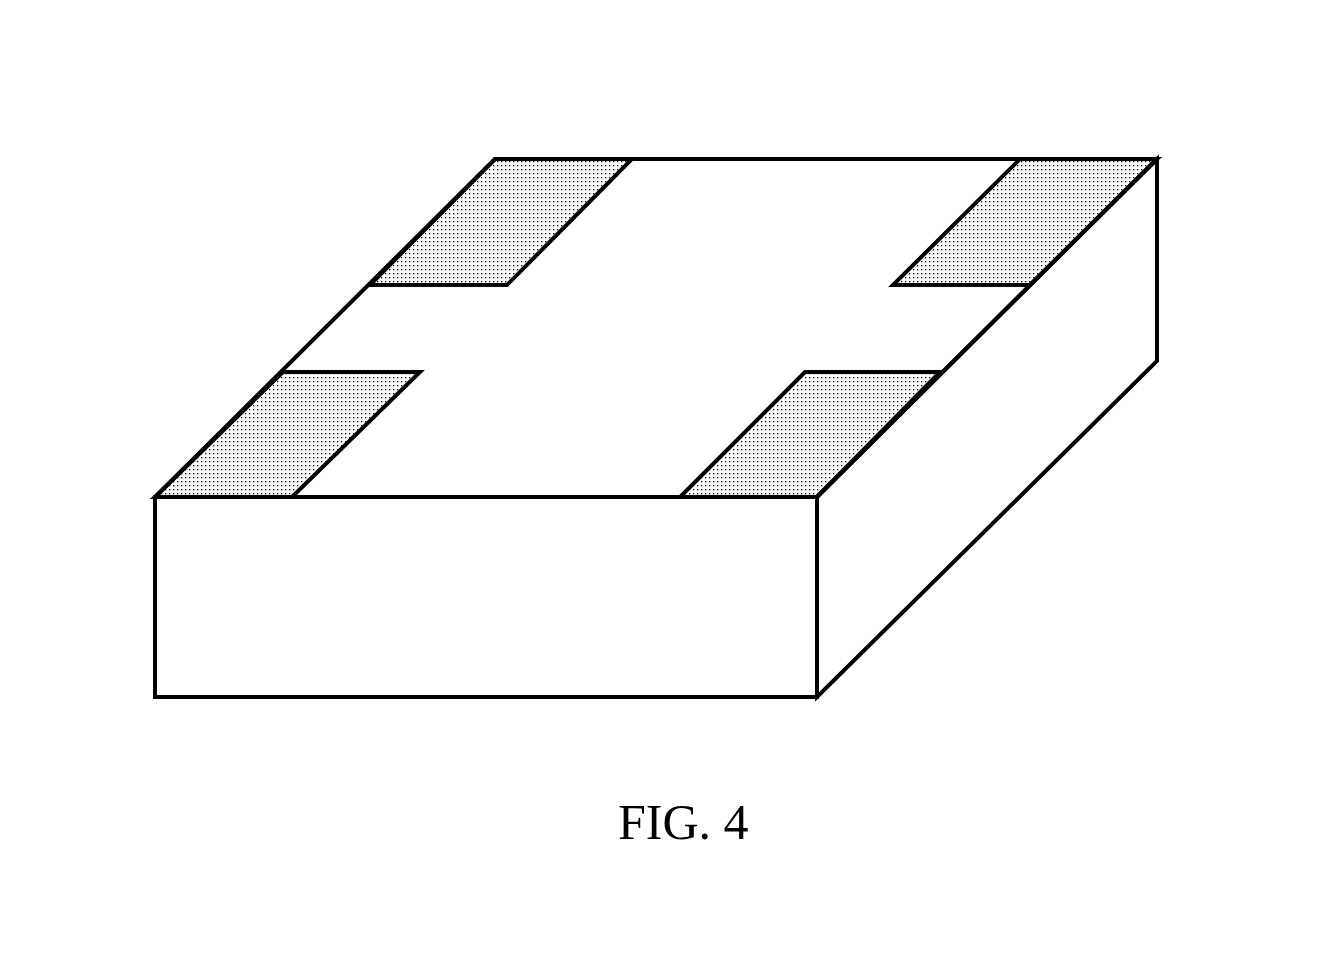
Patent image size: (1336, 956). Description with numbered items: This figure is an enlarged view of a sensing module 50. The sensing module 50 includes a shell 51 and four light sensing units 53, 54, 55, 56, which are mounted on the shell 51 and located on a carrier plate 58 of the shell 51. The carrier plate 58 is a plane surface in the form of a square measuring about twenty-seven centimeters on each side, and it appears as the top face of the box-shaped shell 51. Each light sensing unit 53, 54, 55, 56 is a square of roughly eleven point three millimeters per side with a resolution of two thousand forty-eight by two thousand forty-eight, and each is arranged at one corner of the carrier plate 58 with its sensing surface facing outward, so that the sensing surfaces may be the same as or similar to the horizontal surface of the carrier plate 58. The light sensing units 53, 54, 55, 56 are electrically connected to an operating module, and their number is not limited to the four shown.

The sensing module 50 is at (380, 62).
The shell 51 is at (1158, 260).
The light sensing unit 53 is at (1028, 241).
The light sensing unit 54 is at (826, 429).
The light sensing unit 55 is at (292, 432).
The light sensing unit 56 is at (506, 220).
The carrier plate 58 is at (658, 337).